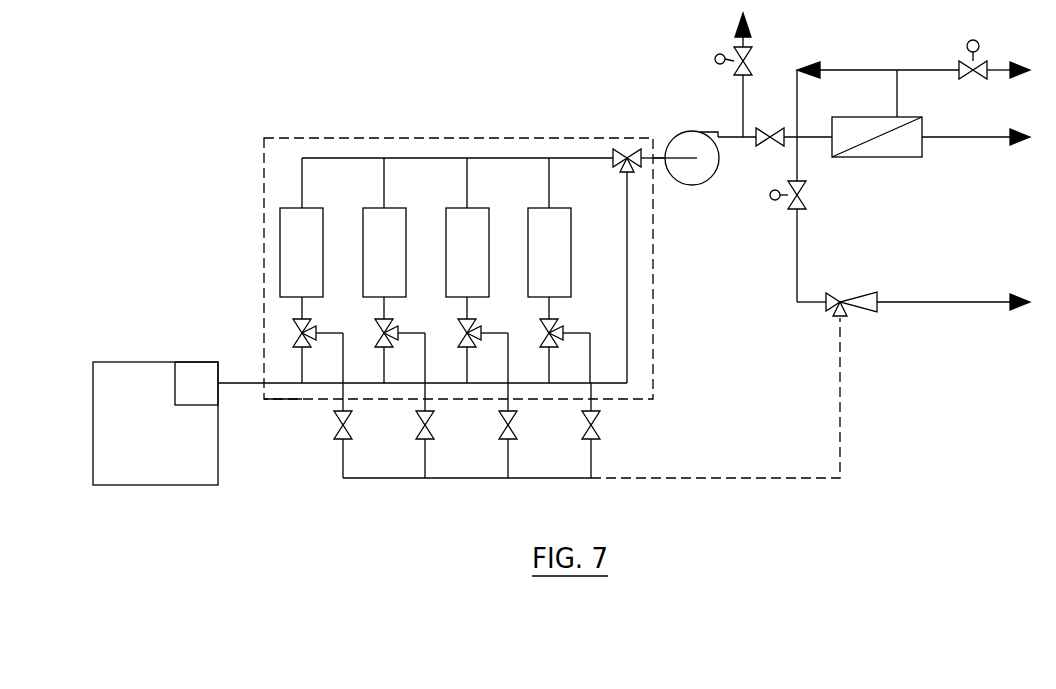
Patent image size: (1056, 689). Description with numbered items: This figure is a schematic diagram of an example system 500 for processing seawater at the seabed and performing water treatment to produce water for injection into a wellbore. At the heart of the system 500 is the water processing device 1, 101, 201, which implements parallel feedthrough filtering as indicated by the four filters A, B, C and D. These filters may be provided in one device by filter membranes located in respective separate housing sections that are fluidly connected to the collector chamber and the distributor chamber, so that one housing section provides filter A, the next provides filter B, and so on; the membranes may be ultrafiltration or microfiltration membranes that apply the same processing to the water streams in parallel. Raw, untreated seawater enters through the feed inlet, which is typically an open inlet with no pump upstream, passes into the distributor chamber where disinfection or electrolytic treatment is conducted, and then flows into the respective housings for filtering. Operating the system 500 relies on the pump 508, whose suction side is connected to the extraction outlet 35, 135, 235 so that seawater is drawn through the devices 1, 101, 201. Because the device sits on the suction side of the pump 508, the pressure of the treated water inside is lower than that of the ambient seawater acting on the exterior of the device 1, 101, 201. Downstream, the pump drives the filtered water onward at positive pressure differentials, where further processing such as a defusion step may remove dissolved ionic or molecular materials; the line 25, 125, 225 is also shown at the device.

The system 500 is at (427, 122).
The device 1 is at (464, 231).
The device 101 is at (464, 231).
The device 201 is at (345, 147).
The pump 508 is at (681, 133).
The extraction outlet 35 is at (719, 209).
The extraction outlet 135 is at (719, 209).
The extraction outlet 235 is at (663, 167).
The supply line 25 is at (285, 456).
The supply line 125 is at (285, 456).
The supply line 225 is at (281, 391).